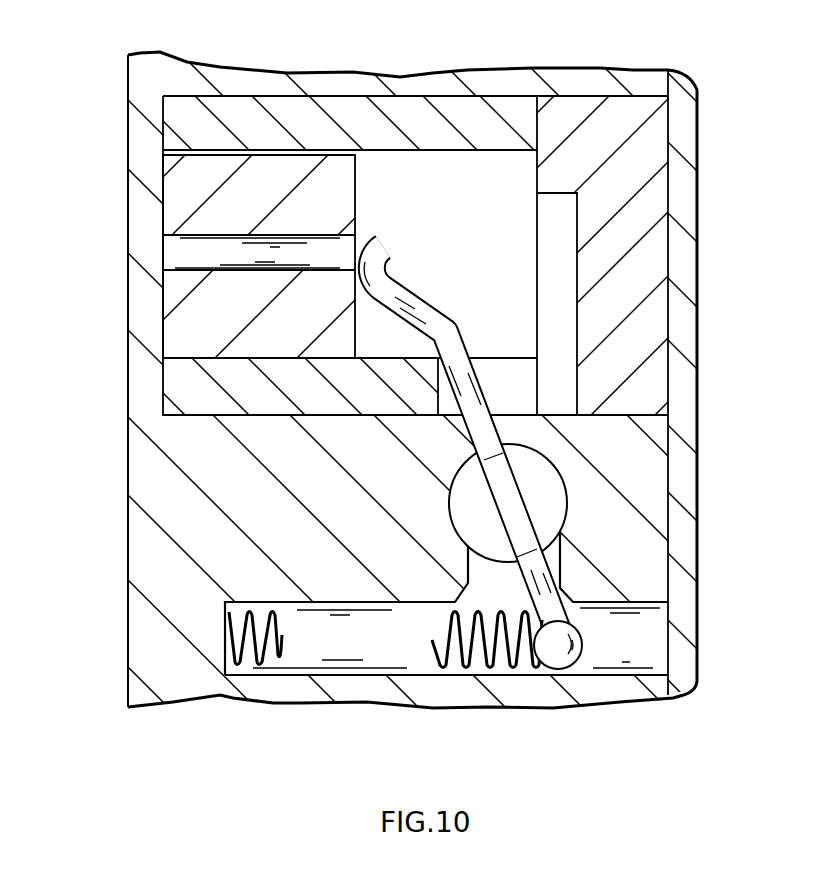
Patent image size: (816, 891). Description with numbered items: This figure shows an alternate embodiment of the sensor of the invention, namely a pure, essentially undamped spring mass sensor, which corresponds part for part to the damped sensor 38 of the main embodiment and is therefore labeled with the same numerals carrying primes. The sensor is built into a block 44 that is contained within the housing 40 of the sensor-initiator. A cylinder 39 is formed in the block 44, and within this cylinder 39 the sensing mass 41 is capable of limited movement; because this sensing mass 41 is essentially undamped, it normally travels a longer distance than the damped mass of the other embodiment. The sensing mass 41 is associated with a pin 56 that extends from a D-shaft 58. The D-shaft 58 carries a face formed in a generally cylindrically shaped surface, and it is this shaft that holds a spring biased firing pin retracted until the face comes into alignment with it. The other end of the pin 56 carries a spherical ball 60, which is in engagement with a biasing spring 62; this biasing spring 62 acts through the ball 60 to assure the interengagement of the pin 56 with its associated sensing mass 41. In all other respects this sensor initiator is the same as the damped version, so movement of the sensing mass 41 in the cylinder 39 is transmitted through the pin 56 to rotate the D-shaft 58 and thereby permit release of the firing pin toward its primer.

The damped sensor 38 is at (293, 117).
The cylinder 39 is at (267, 152).
The housing 40 is at (754, 375).
The sensing mass 41 is at (413, 170).
The block 44 is at (142, 537).
The pin 56 is at (469, 256).
The D-shaft 58 is at (629, 506).
The spherical ball 60 is at (641, 628).
The biasing spring 62 is at (432, 640).